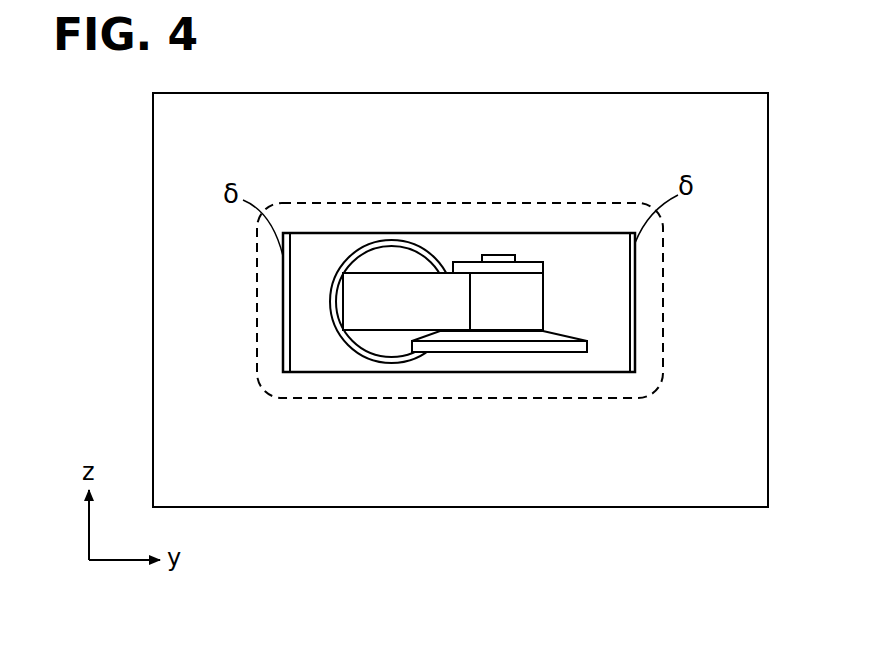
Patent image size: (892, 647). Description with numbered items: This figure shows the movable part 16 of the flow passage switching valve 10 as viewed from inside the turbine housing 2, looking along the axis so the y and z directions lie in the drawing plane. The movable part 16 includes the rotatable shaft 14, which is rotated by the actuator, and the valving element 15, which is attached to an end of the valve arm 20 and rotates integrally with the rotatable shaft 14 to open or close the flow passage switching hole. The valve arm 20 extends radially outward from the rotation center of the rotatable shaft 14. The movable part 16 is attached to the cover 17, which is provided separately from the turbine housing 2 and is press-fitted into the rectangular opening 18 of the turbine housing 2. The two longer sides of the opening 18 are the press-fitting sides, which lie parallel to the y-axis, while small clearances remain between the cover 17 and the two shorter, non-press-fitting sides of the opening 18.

The turbine housing 2 is at (190, 145).
The flow passage switching valve 10 is at (562, 360).
The rotatable shaft 14 is at (375, 260).
The valving element 15 is at (556, 346).
The movable part 16 is at (380, 366).
The cover 17 is at (317, 358).
The opening 18 is at (457, 233).
The valve arm 20 is at (417, 288).